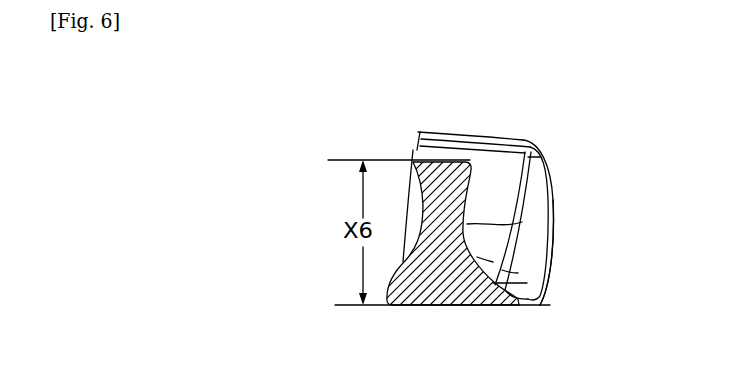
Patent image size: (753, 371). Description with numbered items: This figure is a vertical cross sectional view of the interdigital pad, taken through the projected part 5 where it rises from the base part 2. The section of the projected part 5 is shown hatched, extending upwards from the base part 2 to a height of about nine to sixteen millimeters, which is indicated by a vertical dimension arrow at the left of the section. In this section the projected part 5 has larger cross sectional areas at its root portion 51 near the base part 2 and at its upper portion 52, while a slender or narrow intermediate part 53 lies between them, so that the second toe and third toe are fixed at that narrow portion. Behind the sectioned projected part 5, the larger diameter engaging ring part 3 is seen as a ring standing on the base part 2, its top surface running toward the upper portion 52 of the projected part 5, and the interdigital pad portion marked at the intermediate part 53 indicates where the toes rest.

The base part 2 is at (488, 304).
The larger diameter engaging ring part 3 is at (528, 125).
The projected part 5 is at (416, 139).
The root portion 51 is at (552, 254).
The upper portion 52 is at (436, 160).
The intermediate part 53 is at (522, 222).